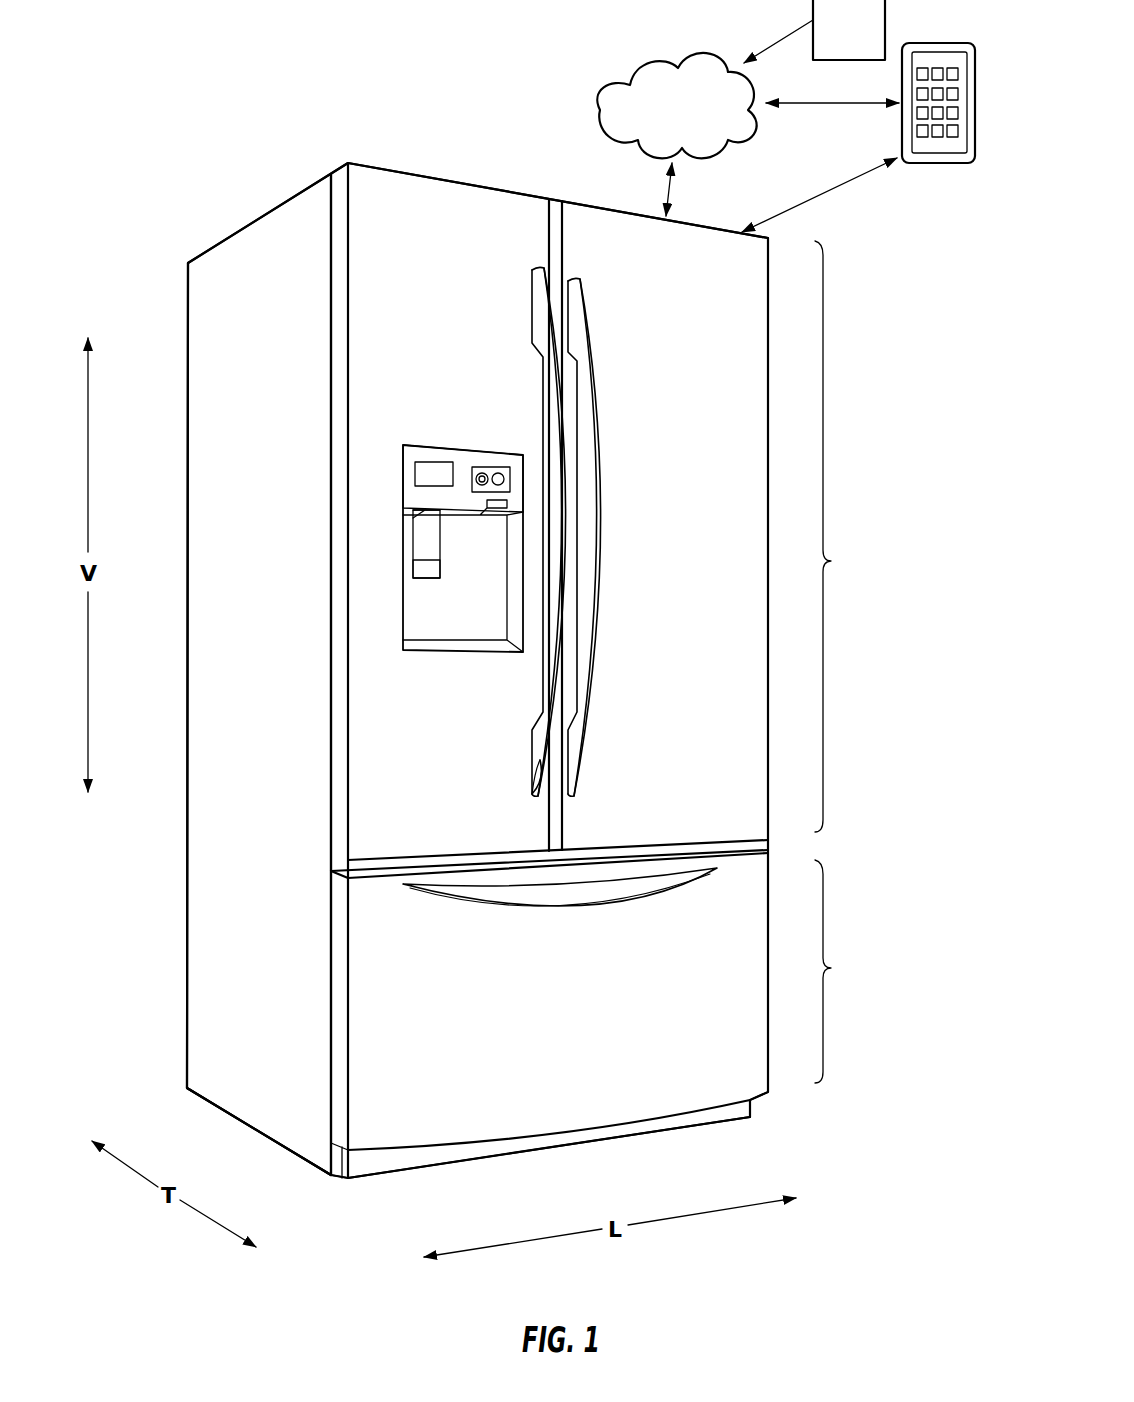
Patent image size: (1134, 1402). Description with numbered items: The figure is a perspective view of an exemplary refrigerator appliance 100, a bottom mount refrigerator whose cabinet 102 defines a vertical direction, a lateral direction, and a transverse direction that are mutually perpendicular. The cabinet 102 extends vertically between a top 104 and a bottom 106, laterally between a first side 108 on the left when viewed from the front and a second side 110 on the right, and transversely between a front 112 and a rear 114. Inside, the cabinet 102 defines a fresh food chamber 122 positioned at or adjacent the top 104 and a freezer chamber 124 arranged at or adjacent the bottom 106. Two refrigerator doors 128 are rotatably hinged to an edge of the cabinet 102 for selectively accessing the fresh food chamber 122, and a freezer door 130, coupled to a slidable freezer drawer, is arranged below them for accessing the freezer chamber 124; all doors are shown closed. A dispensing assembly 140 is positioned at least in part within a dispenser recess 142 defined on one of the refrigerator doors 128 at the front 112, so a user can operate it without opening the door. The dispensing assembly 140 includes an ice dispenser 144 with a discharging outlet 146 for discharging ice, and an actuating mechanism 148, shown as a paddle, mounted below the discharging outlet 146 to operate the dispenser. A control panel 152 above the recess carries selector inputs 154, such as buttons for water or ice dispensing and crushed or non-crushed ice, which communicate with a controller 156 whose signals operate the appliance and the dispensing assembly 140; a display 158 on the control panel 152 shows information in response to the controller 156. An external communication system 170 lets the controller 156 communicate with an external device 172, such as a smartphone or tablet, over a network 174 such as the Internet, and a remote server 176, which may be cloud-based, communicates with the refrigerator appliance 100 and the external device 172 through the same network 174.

The refrigerator appliance 100 is at (296, 102).
The cabinet 102 is at (260, 255).
The top 104 is at (183, 262).
The bottom 106 is at (176, 1087).
The first side 108 is at (346, 1188).
The second side 110 is at (754, 1121).
The front 112 is at (326, 1184).
The rear 114 is at (186, 1094).
The fresh food chamber 122 is at (844, 536).
The freezer chamber 124 is at (844, 971).
The refrigerator doors 128 is at (475, 308).
The freezer door 130 is at (610, 1005).
The dispensing assembly 140 is at (413, 411).
The dispenser recess 142 is at (468, 641).
The ice dispenser 144 is at (406, 573).
The discharging outlet 146 is at (420, 522).
The actuating mechanism 148 is at (430, 562).
The control panel 152 is at (396, 468).
The selector inputs 154 is at (483, 476).
The controller 156 is at (510, 478).
The display 158 is at (433, 472).
The external communication system 170 is at (603, 50).
The external device 172 is at (938, 165).
The network 174 is at (697, 119).
The remote server 176 is at (869, 36).